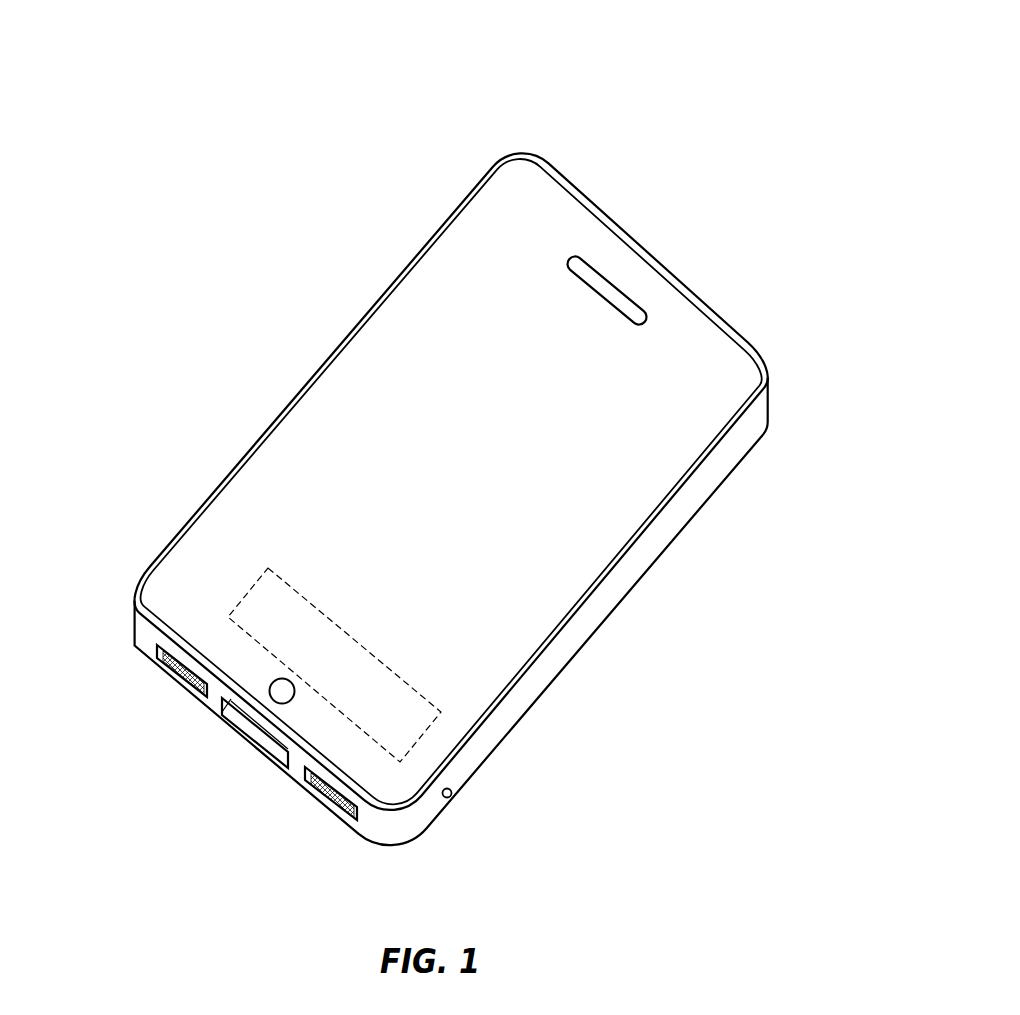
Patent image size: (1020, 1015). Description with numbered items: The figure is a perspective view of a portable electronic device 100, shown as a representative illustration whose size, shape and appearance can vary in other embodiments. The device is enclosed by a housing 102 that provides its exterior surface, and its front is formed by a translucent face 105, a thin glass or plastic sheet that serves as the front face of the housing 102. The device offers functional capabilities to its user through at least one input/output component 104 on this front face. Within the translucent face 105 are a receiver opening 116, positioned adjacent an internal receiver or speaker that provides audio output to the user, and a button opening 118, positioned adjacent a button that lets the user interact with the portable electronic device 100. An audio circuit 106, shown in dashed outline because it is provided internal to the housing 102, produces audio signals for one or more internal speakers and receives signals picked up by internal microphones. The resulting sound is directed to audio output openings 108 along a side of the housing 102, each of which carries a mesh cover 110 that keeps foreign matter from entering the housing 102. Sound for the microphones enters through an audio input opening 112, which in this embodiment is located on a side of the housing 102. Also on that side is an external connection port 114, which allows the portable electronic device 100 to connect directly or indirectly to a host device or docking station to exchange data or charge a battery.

The portable electronic device 100 is at (397, 90).
The housing 102 is at (572, 175).
The input/output component 104 is at (475, 404).
The translucent face 105 is at (700, 360).
The audio circuit 106 is at (247, 593).
The audio output openings 108 is at (174, 681).
The mesh cover 110 is at (163, 655).
The audio input opening 112 is at (452, 798).
The external connection port 114 is at (241, 725).
The receiver opening 116 is at (608, 293).
The button opening 118 is at (275, 703).